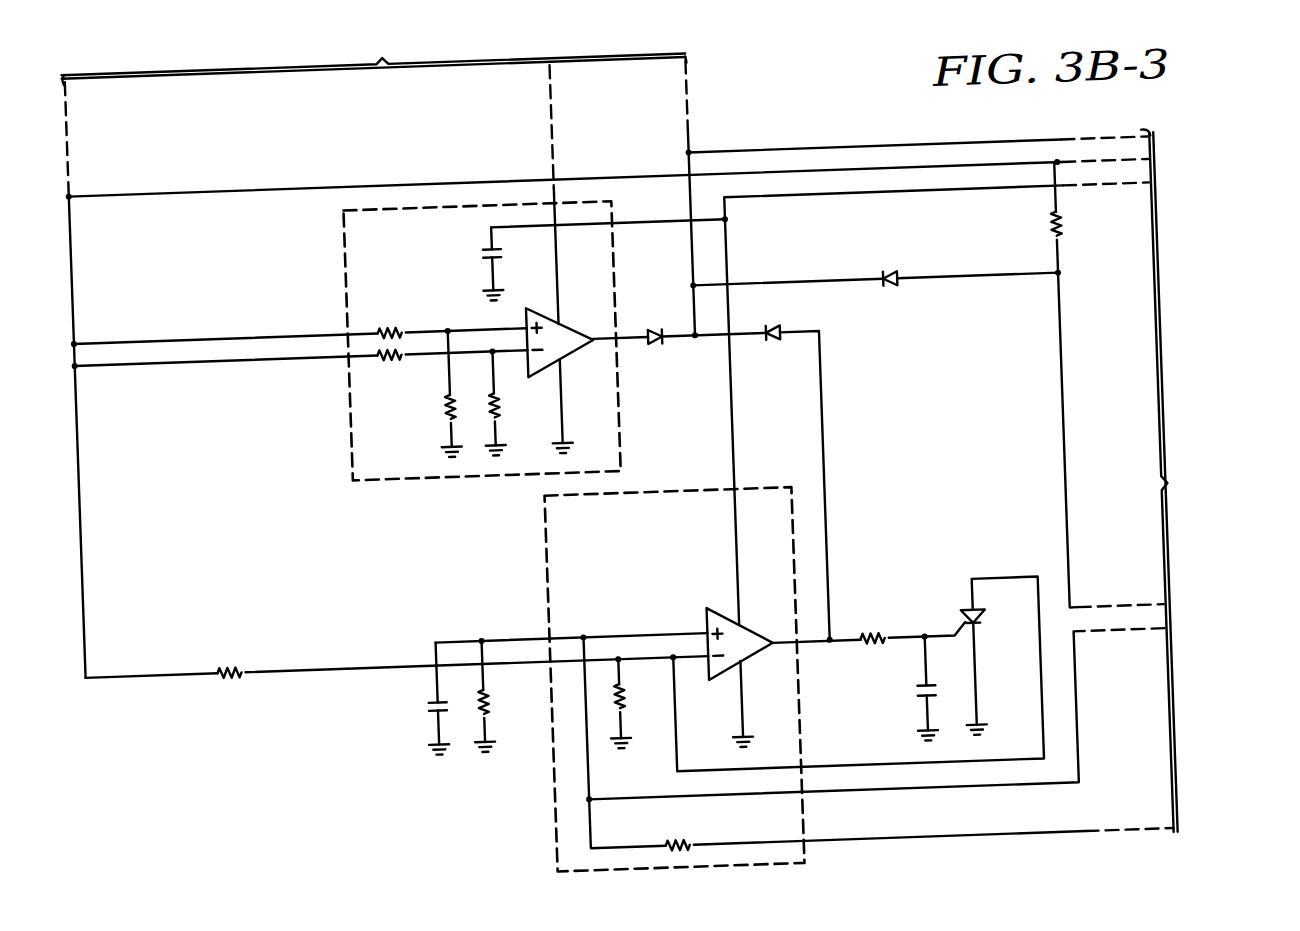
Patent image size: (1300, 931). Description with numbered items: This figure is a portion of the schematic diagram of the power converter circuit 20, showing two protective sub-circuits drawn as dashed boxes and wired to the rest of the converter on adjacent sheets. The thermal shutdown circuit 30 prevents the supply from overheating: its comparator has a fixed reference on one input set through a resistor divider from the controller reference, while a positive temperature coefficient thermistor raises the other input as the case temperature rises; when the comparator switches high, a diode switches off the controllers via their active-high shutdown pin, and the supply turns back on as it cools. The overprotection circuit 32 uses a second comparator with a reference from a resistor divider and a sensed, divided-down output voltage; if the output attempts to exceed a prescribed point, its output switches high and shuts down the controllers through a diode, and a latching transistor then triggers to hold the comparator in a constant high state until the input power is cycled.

The power converter circuit 20 is at (354, 776).
The thermal shutdown circuit 30 is at (345, 398).
The overprotection circuit 32 is at (542, 797).